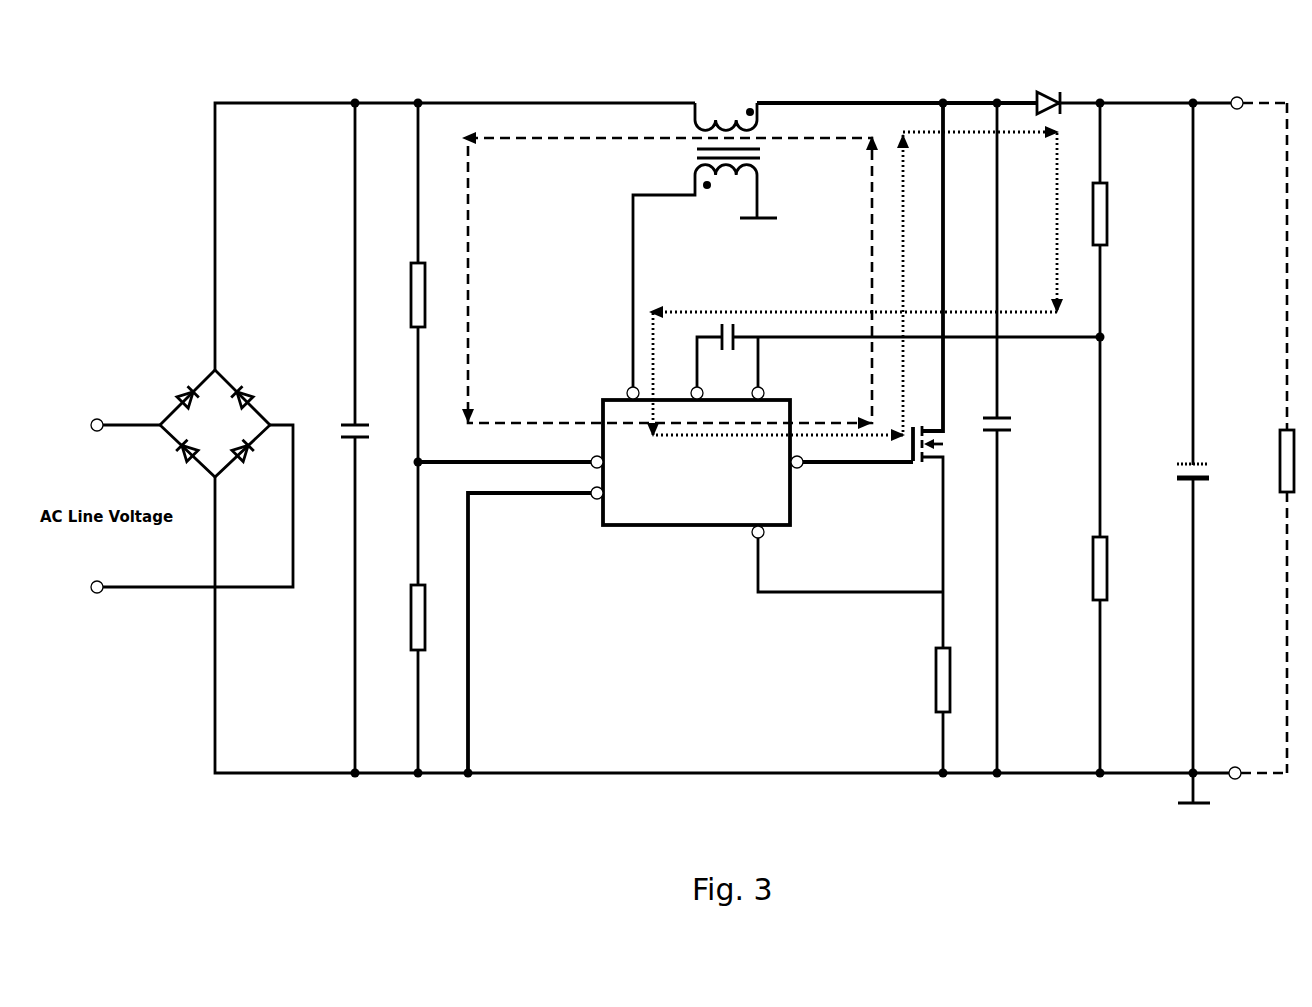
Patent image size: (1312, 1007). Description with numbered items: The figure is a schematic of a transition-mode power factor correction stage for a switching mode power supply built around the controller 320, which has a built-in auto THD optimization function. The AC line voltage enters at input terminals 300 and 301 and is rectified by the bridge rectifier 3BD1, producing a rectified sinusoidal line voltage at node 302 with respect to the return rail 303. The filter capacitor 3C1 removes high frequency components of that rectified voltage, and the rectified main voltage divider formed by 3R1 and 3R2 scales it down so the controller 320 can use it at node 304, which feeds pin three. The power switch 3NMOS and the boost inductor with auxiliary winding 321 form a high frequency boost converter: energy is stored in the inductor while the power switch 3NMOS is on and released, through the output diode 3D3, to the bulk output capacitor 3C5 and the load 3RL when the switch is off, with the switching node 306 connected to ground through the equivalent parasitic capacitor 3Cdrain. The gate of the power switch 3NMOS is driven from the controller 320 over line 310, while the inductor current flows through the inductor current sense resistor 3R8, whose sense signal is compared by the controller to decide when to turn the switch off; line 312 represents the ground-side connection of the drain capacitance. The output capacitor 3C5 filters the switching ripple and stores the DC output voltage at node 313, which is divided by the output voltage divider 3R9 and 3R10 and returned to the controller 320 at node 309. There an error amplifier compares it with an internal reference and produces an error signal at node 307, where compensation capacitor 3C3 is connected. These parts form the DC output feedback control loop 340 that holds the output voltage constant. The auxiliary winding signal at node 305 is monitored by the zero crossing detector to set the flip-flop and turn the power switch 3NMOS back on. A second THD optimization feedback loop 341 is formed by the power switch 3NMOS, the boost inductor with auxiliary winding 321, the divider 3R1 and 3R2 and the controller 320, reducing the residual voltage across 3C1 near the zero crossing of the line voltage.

The AC line input terminal 300 is at (122, 414).
The AC line input terminal 301 is at (188, 509).
The node 302 is at (723, 226).
The ground return rail 303 is at (722, 627).
The node 304 is at (503, 453).
The node 305 is at (718, 276).
The node 306 is at (907, 256).
The node 307 is at (691, 362).
The node 309 is at (919, 352).
The gate drive line 310 is at (858, 452).
The drain capacitor return 312 is at (1020, 601).
The node 313 is at (1192, 95).
The controller 320 is at (697, 462).
The boost inductor with auxiliary winding 321 is at (728, 123).
The DC output feedback control loop 340 is at (855, 283).
The THD optimization feedback loop 341 is at (670, 280).
The bridge rectifier 3BD1 is at (215, 418).
The filter capacitor 3C1 is at (367, 438).
The rectified main voltage divider resistor 3R1 is at (436, 282).
The rectified main voltage divider resistor 3R2 is at (401, 617).
The feedback capacitor 3C3 is at (724, 321).
The power switch 3NMOS is at (905, 537).
The inductor current sense resistor 3R8 is at (922, 710).
The equivalent parasitic capacitor 3Cdrain is at (1028, 265).
The output diode 3D3 is at (1043, 89).
The output voltage divider resistor 3R9 is at (1119, 220).
The output voltage divider resistor 3R10 is at (1125, 555).
The output capacitor 3C5 is at (1175, 453).
The load 3RL is at (1261, 441).